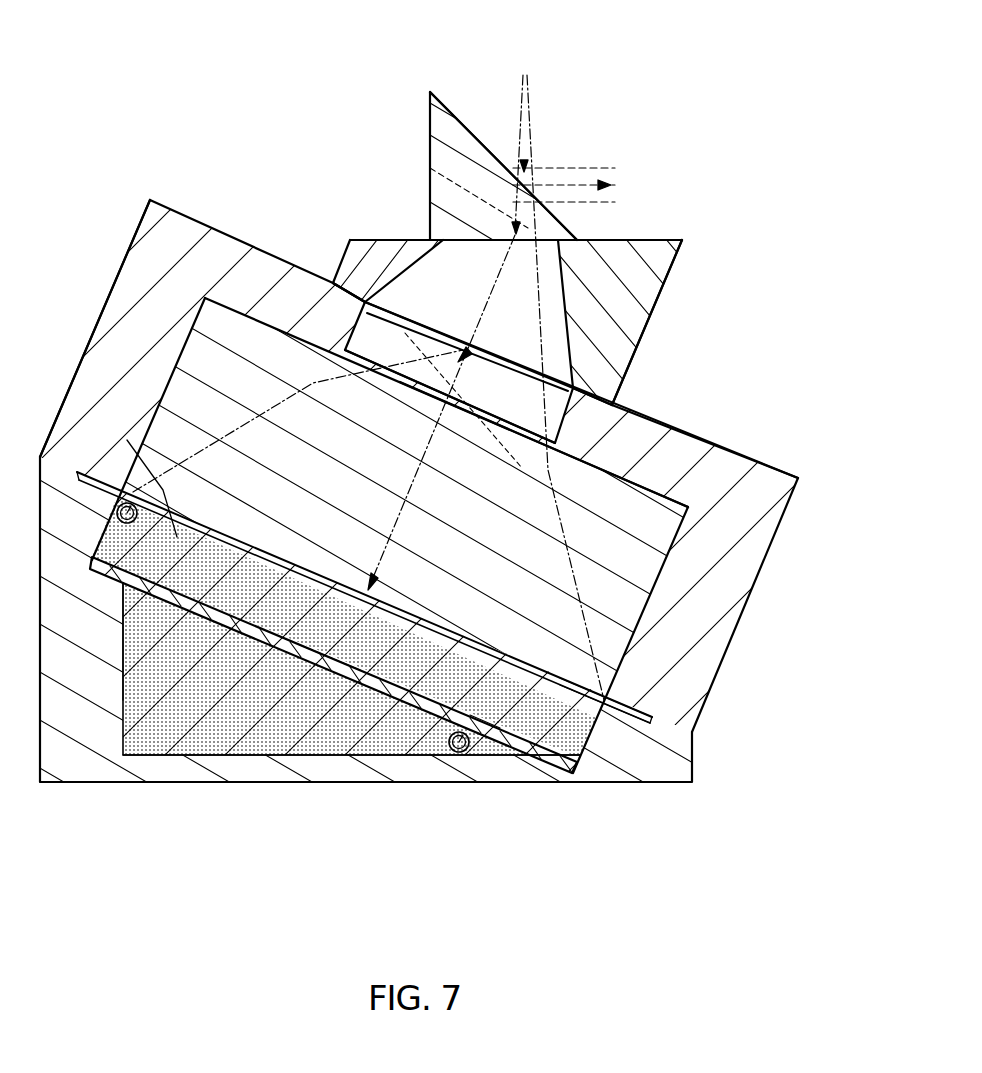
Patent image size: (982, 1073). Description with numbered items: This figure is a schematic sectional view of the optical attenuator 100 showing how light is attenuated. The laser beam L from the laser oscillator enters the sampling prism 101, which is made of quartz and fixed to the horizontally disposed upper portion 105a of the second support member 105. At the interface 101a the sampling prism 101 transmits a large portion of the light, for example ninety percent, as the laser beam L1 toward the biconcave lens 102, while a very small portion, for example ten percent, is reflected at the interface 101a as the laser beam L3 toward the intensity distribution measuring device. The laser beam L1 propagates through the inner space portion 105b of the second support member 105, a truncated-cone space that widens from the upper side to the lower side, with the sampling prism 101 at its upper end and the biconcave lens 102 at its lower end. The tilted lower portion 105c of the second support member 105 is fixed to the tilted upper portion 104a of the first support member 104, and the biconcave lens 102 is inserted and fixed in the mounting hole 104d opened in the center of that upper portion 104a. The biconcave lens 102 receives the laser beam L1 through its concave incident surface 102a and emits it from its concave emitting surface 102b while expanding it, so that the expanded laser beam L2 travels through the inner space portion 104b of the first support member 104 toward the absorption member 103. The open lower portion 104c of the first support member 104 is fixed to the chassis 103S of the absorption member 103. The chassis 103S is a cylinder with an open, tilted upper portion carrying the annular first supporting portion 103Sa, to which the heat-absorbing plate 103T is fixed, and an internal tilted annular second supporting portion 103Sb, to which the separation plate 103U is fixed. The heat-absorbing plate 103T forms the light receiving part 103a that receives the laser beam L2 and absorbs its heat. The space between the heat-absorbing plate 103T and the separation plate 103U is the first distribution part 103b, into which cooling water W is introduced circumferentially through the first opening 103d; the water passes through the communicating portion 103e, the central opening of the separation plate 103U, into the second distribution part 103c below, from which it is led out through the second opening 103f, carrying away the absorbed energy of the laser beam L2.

The optical attenuator 100 is at (40, 40).
The sampling prism 101 is at (438, 157).
The interface 101a is at (552, 216).
The biconcave lens 102 is at (548, 418).
The incident surface 102a is at (540, 347).
The emitting surface 102b is at (560, 455).
The absorption member 103 is at (692, 754).
The light receiving part 103a is at (213, 540).
The first distribution part 103b is at (280, 567).
The second distribution part 103c is at (392, 730).
The first opening 103d is at (120, 520).
The communicating portion 103e is at (337, 667).
The second opening 103f is at (459, 742).
The chassis 103S is at (624, 765).
The first supporting portion 103Sa is at (645, 700).
The second supporting portion 103Sb is at (587, 740).
The heat-absorbing plate 103T is at (525, 667).
The separation plate 103U is at (483, 723).
The first support member 104 is at (740, 617).
The upper portion 104a is at (720, 455).
The inner space portion 104b is at (637, 495).
The lower portion 104c is at (73, 472).
The mounting hole 104d is at (575, 372).
The second support member 105 is at (650, 316).
The upper portion 105a is at (662, 240).
The inner space portion 105b is at (655, 302).
The lower portion 105c is at (345, 300).
The laser beam L is at (530, 105).
The laser beam L1 is at (477, 342).
The laser beam L2 is at (395, 480).
The laser beam L3 is at (600, 168).
The cooling water W is at (178, 538).